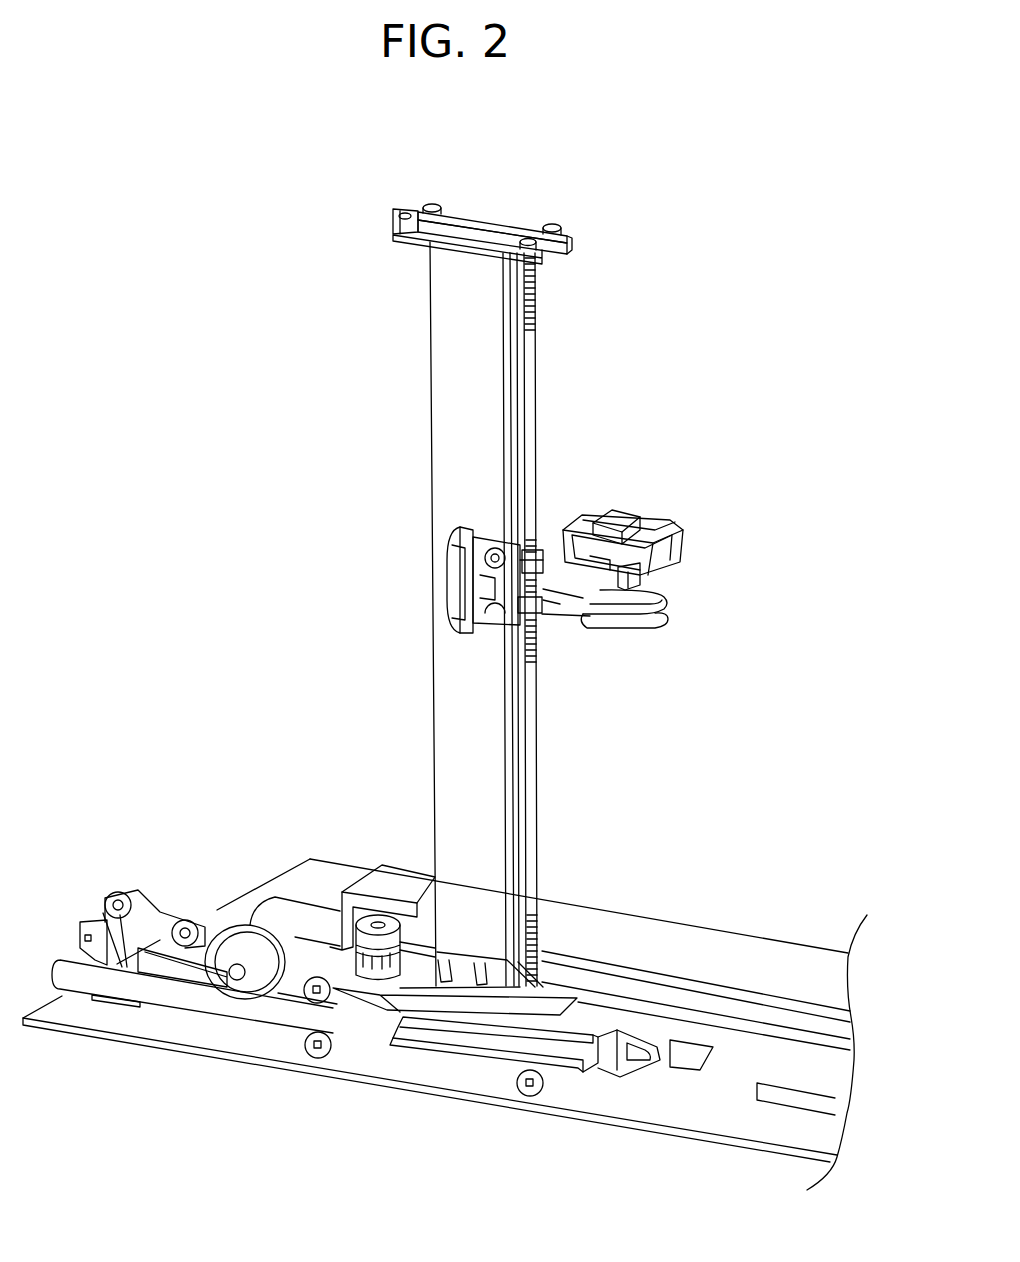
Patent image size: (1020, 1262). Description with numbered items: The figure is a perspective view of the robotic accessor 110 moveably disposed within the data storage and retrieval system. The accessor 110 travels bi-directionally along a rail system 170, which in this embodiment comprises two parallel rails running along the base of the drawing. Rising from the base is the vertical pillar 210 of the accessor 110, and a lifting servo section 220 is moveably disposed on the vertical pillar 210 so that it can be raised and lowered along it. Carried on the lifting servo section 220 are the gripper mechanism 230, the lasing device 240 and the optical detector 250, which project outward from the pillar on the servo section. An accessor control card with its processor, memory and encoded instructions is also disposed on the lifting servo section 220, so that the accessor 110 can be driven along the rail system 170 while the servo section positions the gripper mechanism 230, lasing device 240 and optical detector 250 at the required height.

The accessor 110 is at (247, 590).
The rail system 170 is at (828, 1103).
The vertical pillar 210 is at (448, 715).
The lifting servo section 220 is at (573, 617).
The gripper mechanism 230 is at (643, 593).
The lasing device 240 is at (667, 508).
The optical detector 250 is at (622, 517).